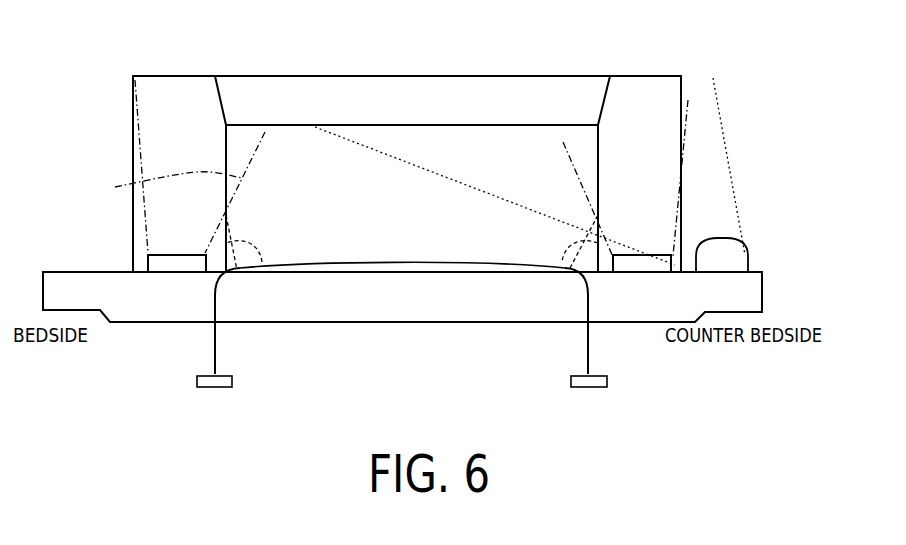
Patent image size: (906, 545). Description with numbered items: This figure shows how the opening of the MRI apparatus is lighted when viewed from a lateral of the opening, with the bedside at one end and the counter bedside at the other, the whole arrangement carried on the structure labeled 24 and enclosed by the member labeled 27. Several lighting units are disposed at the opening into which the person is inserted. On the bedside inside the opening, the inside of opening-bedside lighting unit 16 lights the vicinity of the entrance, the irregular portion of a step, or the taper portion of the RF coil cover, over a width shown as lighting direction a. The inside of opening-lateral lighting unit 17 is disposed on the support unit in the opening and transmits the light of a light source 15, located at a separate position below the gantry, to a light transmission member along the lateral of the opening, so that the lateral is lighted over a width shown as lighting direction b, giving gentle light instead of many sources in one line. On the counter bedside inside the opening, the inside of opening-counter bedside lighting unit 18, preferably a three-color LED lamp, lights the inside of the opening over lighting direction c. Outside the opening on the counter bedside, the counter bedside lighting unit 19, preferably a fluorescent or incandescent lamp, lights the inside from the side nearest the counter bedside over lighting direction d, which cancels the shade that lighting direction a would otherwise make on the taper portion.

The light source 15 is at (214, 390).
The inside of opening-bedside lighting unit 16 is at (186, 265).
The inside of opening-lateral lighting unit 17 is at (370, 274).
The inside of opening-counter bedside lighting unit 18 is at (628, 265).
The counter bedside lighting unit 19 is at (750, 253).
The base 24 is at (65, 272).
The cover 27 is at (220, 97).
The lighting direction a is at (118, 187).
The lighting direction b is at (262, 262).
The lighting direction c is at (572, 160).
The lighting direction d is at (407, 163).